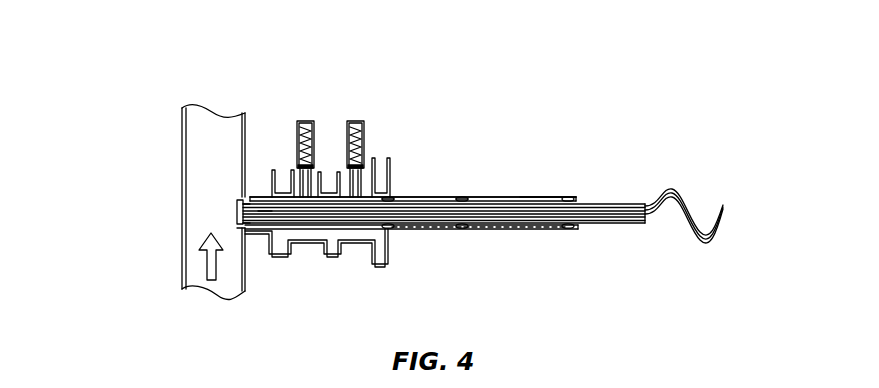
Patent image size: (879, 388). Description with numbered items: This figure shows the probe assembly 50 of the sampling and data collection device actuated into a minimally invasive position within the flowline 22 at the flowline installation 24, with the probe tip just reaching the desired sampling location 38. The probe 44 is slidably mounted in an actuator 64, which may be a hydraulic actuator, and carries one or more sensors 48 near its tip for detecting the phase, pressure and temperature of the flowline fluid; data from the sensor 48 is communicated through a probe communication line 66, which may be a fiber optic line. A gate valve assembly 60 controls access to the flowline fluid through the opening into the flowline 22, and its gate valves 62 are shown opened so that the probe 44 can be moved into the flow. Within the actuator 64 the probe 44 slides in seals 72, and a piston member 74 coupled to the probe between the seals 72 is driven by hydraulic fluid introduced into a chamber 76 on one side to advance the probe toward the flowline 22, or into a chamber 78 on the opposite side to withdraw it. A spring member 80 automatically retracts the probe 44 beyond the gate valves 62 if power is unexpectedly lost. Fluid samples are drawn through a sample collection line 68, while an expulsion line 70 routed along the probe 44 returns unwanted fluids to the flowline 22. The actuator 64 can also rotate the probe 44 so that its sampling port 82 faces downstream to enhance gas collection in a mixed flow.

The flowline 22 is at (182, 245).
The flowline installation 24 is at (259, 257).
The sampling location 38 is at (200, 163).
The probe 44 is at (257, 200).
The sensor 48 is at (267, 212).
The probe assembly 50 is at (572, 76).
The gate valve assembly 60 is at (376, 131).
The gate valves 62 is at (312, 188).
The actuator 64 is at (569, 196).
The probe communication line 66 is at (601, 211).
The sample collection line 68 is at (625, 219).
The expulsion line 70 is at (597, 206).
The seals 72 is at (388, 228).
The piston member 74 is at (462, 200).
The chamber 76 is at (546, 194).
The chamber 78 is at (428, 199).
The spring member 80 is at (443, 228).
The sampling port 82 is at (237, 212).